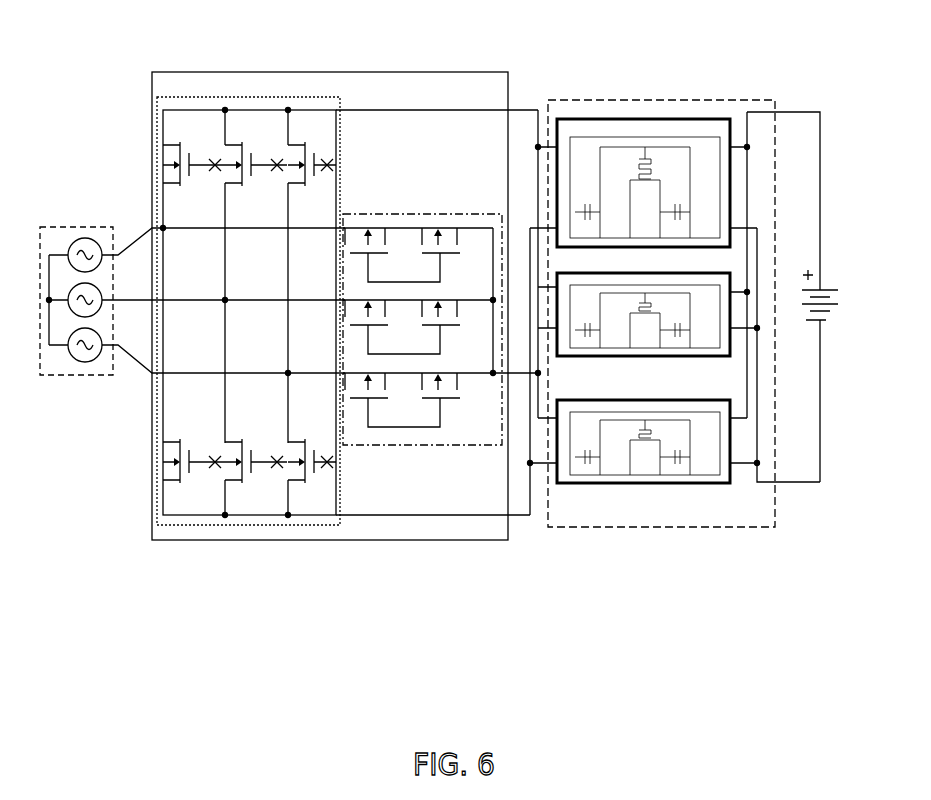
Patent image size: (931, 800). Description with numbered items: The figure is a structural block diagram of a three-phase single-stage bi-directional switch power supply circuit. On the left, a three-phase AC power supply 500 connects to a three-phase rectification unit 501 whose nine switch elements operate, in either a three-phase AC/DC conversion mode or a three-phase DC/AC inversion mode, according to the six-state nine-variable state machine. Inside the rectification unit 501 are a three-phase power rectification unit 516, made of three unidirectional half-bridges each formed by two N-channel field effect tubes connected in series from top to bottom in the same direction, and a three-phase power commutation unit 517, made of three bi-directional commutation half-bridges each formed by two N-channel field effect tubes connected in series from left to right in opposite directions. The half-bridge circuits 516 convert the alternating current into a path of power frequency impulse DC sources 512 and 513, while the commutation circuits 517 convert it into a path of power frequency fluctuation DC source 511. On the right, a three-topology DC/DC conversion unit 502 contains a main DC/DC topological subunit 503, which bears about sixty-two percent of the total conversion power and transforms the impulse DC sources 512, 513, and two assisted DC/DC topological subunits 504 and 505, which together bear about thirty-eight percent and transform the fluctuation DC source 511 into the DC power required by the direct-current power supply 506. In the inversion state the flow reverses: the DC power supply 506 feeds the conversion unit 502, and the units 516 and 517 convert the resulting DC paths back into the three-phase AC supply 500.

The three-phase AC power supply 500 is at (52, 227).
The three-phase rectification unit 501 is at (329, 72).
The DC/DC conversion unit 502 is at (575, 100).
The main DC/DC topological subunit 503 is at (637, 119).
The assisted DC/DC topological subunit 504 is at (608, 356).
The assisted DC/DC topological subunit 505 is at (618, 483).
The direct-current inversion power supply 506 is at (821, 283).
The power frequency fluctuation DC power supply 511 is at (491, 378).
The power frequency impulse DC power supply 512 is at (538, 147).
The power frequency impulse DC power supply 513 is at (532, 470).
The three-phase power rectification unit 516 is at (252, 526).
The three-phase power commutation unit 517 is at (415, 214).